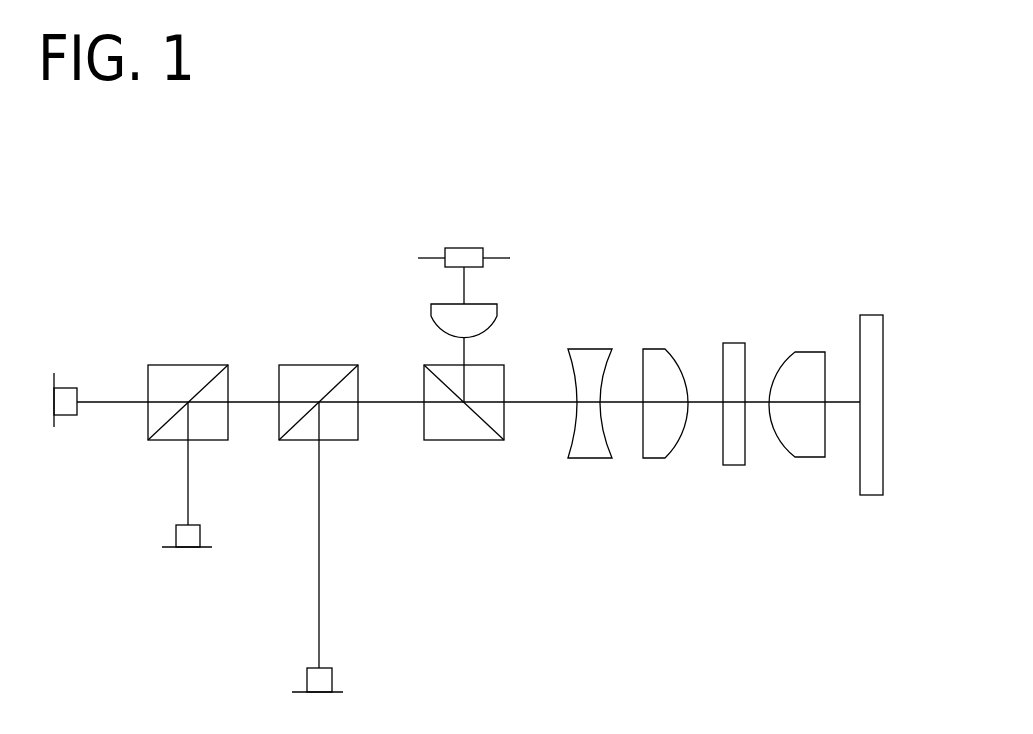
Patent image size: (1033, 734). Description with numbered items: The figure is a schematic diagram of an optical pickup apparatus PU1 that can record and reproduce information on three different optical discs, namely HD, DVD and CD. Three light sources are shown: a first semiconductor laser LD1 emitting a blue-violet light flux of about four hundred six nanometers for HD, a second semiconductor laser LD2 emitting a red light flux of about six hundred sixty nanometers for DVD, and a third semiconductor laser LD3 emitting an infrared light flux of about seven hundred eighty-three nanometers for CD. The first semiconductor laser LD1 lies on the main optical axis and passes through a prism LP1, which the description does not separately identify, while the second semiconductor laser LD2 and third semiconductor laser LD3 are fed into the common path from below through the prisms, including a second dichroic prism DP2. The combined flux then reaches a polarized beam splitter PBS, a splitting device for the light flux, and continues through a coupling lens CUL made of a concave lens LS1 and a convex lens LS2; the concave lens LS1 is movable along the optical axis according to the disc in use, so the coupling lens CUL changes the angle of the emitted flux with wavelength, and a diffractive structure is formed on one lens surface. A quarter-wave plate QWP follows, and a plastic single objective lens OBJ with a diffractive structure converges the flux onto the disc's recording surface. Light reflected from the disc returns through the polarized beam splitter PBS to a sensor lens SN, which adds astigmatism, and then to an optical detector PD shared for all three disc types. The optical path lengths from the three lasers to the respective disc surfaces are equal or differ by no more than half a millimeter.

The optical pickup apparatus PU1 is at (834, 218).
The first semiconductor laser LD1 is at (54, 373).
The second semiconductor laser LD2 is at (190, 552).
The third semiconductor laser LD3 is at (333, 678).
The first beam combining prism LP1 is at (188, 365).
The second dichroic prism DP2 is at (318, 365).
The polarized beam splitter PBS is at (465, 445).
The sensor lens SN is at (431, 310).
The optical detector PD is at (464, 248).
The coupling lens CUL is at (688, 474).
The concave lens LS1 is at (592, 349).
The convex lens LS2 is at (655, 349).
The λ/4 wavelength plate QWP is at (736, 343).
The objective lens OBJ is at (808, 460).